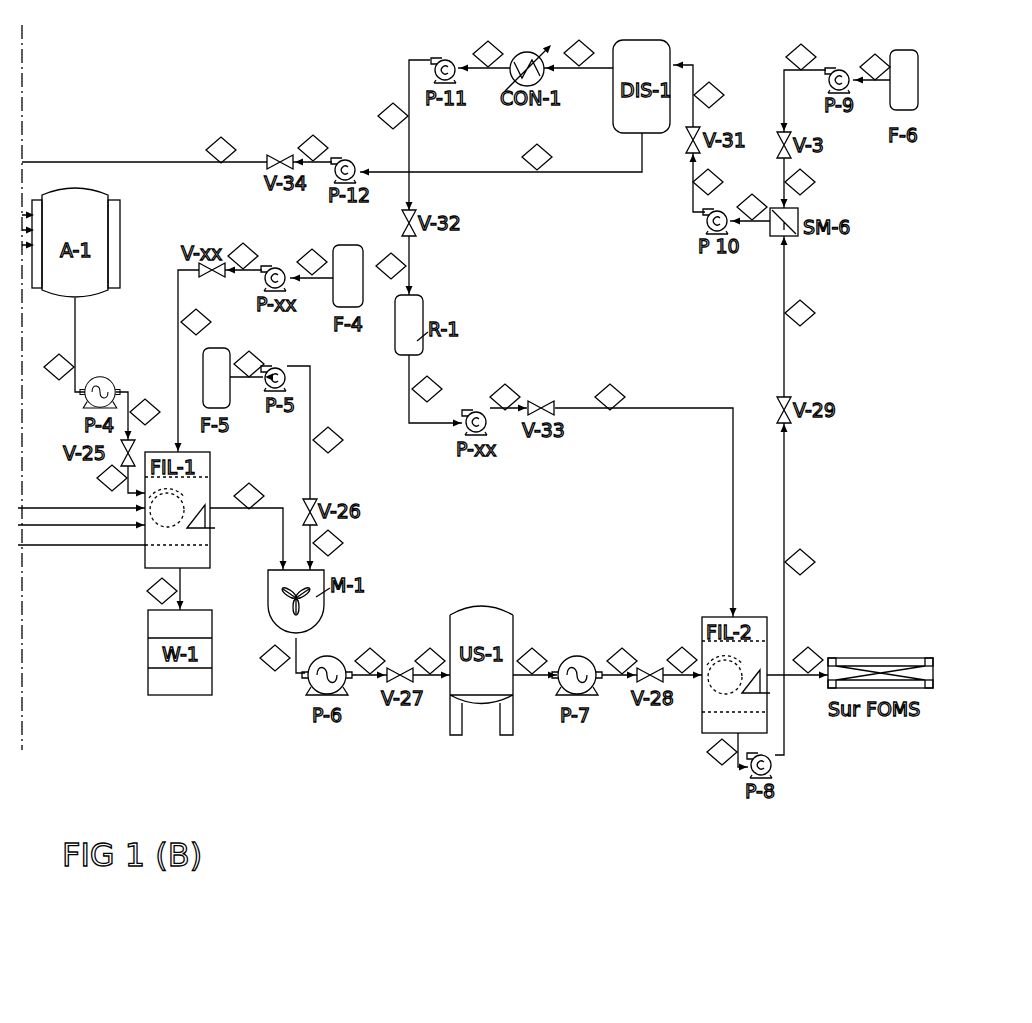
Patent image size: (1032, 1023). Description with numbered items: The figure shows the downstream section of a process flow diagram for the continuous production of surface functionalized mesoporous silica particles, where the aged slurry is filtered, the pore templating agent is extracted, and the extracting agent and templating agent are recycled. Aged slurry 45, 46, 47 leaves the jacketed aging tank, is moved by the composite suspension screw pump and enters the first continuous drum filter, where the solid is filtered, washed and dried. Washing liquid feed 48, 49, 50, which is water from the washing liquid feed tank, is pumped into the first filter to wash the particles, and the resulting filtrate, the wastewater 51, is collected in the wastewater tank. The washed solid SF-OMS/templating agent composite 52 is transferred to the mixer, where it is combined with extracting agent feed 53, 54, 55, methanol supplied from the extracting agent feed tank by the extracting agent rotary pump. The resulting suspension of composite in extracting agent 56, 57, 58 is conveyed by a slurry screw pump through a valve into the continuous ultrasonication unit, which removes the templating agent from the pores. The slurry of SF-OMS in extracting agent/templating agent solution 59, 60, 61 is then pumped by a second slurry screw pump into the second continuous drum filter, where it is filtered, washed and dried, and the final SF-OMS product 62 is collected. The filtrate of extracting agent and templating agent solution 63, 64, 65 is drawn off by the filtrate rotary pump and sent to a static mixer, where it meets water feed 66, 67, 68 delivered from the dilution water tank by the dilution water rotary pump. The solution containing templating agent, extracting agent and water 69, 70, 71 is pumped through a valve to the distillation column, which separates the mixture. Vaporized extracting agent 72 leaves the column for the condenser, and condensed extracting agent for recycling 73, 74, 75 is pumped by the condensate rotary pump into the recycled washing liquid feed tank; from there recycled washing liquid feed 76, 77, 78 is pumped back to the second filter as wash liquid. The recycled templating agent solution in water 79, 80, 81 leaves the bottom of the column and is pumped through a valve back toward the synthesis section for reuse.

The aged slurry 45 is at (62, 360).
The aged slurry 46 is at (156, 395).
The aged slurry 47 is at (106, 481).
The washing liquid feed 48 is at (322, 245).
The washing liquid feed 49 is at (247, 249).
The washing liquid feed 50 is at (205, 318).
The filtrate: wastewater 51 is at (154, 593).
The solid: SF-OMS/templating agent composite 52 is at (260, 478).
The extracting agent feed 53 is at (261, 348).
The extracting agent feed 54 is at (342, 428).
The extracting agent feed 55 is at (335, 538).
The suspension: SF-OMS/templating agent composite in extracting agent 56 is at (270, 664).
The suspension: SF-OMS/templating agent composite in extracting agent 57 is at (380, 644).
The suspension: SF-OMS/templating agent composite in extracting agent 58 is at (440, 644).
The slurry: SF-OMS in extracting agent/templating agent solution 59 is at (542, 644).
The slurry: SF-OMS in extracting agent/templating agent solution 60 is at (626, 654).
The slurry: SF-OMS in extracting agent/templating agent solution 61 is at (692, 643).
The SF-OMS final product 62 is at (818, 643).
The filtrate: extracting agent/templating agent solution 63 is at (716, 756).
The filtrate: extracting agent/templating agent solution 64 is at (811, 545).
The filtrate: extracting agent/templating agent solution 65 is at (811, 296).
The water feed 66 is at (808, 178).
The water feed 67 is at (811, 40).
The water feed 68 is at (877, 60).
The solution containing templating agent, extracting agent and water 69 is at (762, 190).
The solution containing templating agent, extracting agent and water 70 is at (700, 184).
The solution containing templating agent, extracting agent and water 71 is at (713, 88).
The vaporized extracting agent 72 is at (590, 36).
The condensed extracting agent for recycling 73 is at (498, 37).
The condensed extracting agent for recycling 74 is at (390, 109).
The condensed extracting agent for recycling 75 is at (388, 259).
The recycled washing liquid feed 76 is at (438, 372).
The recycled washing liquid feed 77 is at (516, 380).
The recycled washing liquid feed 78 is at (621, 380).
The recycled templating agent solution in water 79 is at (554, 148).
The recycled templating agent solution in water 80 is at (323, 131).
The recycled templating agent solution in water 81 is at (225, 143).